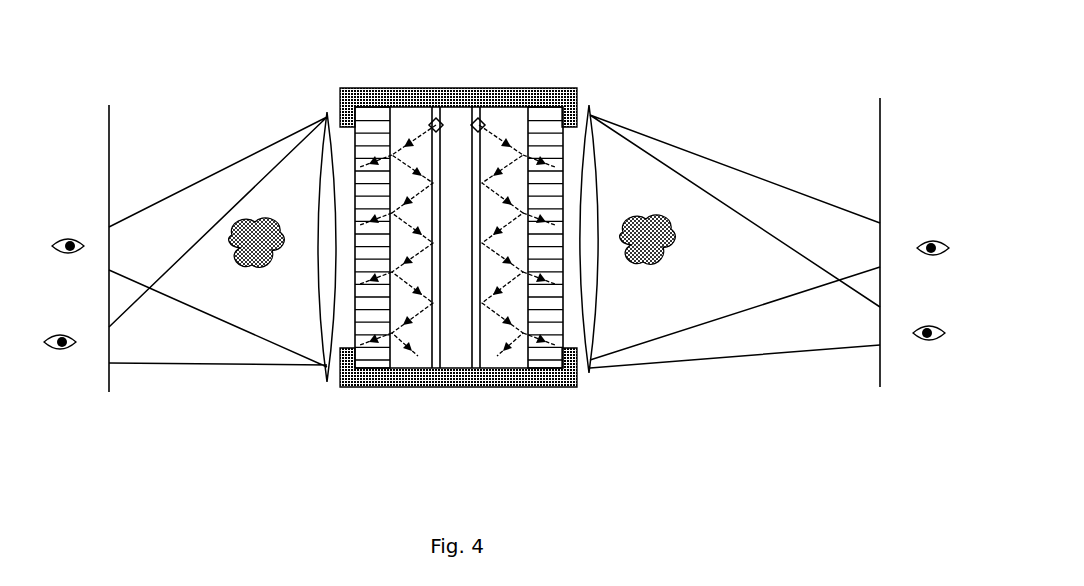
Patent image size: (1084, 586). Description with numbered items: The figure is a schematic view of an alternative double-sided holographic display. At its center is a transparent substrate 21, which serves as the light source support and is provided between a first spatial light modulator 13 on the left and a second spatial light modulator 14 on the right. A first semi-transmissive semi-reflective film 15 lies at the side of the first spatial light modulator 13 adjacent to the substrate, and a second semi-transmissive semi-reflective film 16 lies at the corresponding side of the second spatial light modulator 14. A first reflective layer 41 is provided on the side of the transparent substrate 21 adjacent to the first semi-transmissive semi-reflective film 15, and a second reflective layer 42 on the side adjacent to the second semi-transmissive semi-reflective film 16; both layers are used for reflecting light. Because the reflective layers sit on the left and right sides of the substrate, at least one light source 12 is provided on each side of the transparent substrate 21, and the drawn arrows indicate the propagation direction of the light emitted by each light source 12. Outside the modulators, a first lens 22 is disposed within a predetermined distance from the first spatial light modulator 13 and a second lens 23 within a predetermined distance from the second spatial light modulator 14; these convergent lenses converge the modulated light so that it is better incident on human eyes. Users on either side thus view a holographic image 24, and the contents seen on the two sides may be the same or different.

The light source 12 is at (438, 107).
The first spatial light modulator 13 is at (372, 362).
The second spatial light modulator 14 is at (548, 118).
The first semi-transmissive semi-reflective film 15 is at (393, 350).
The second semi-transmissive semi-reflective film 16 is at (545, 352).
The transparent substrate 21 is at (457, 360).
The first lens 22 is at (317, 168).
The second lens 23 is at (600, 120).
The holographic image 24 is at (657, 213).
The first reflective layer 41 is at (407, 132).
The second reflective layer 42 is at (503, 132).